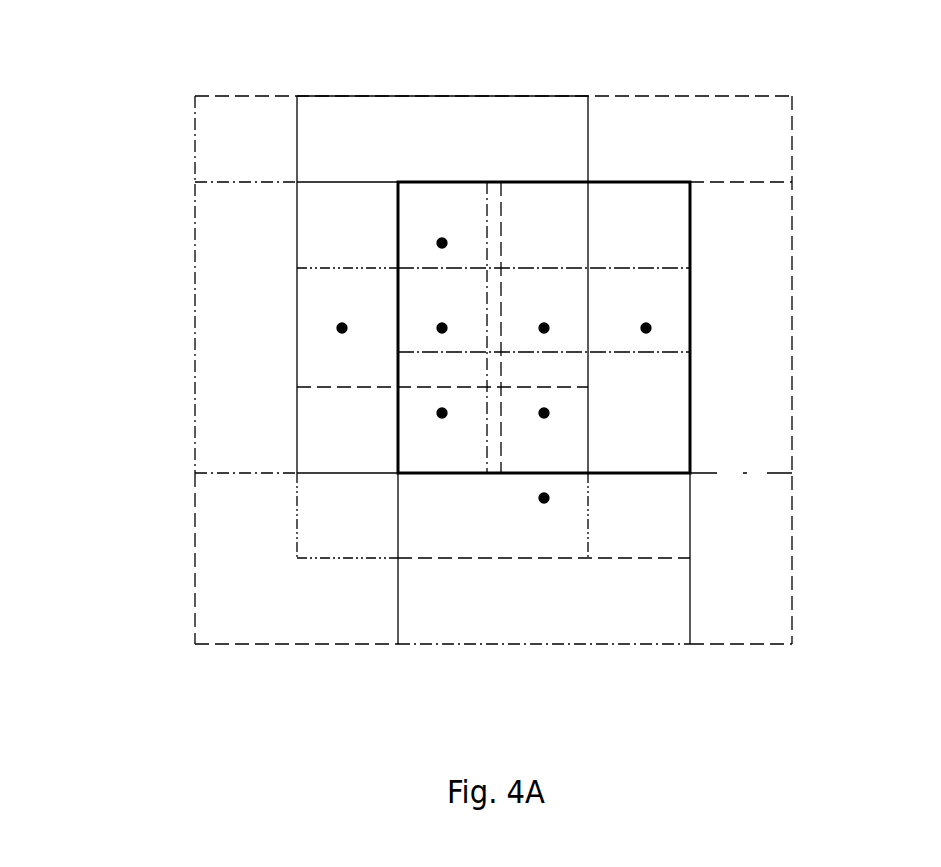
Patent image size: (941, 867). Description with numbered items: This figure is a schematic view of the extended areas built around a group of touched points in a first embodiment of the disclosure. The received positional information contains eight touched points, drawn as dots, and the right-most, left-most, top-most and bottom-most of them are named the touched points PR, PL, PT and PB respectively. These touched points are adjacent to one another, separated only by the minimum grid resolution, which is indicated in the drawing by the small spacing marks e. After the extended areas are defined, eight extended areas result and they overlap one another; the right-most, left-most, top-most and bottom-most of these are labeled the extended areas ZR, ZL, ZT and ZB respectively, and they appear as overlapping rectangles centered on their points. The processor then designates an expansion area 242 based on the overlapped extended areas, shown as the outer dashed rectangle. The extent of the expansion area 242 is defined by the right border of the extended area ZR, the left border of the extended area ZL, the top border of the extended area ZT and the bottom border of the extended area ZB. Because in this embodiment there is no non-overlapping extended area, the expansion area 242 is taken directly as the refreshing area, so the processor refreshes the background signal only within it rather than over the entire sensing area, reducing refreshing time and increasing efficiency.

The expansion area 242 is at (792, 585).
The top-most extended area ZT is at (393, 97).
The left-most extended area ZL is at (195, 270).
The right-most extended area ZR is at (793, 265).
The bottom-most extended area ZB is at (502, 645).
The top-most touched point PT is at (442, 243).
The left-most touched point PL is at (342, 328).
The right-most touched point PR is at (646, 328).
The bottom-most touched point PB is at (544, 498).
The spacing e is at (741, 468).